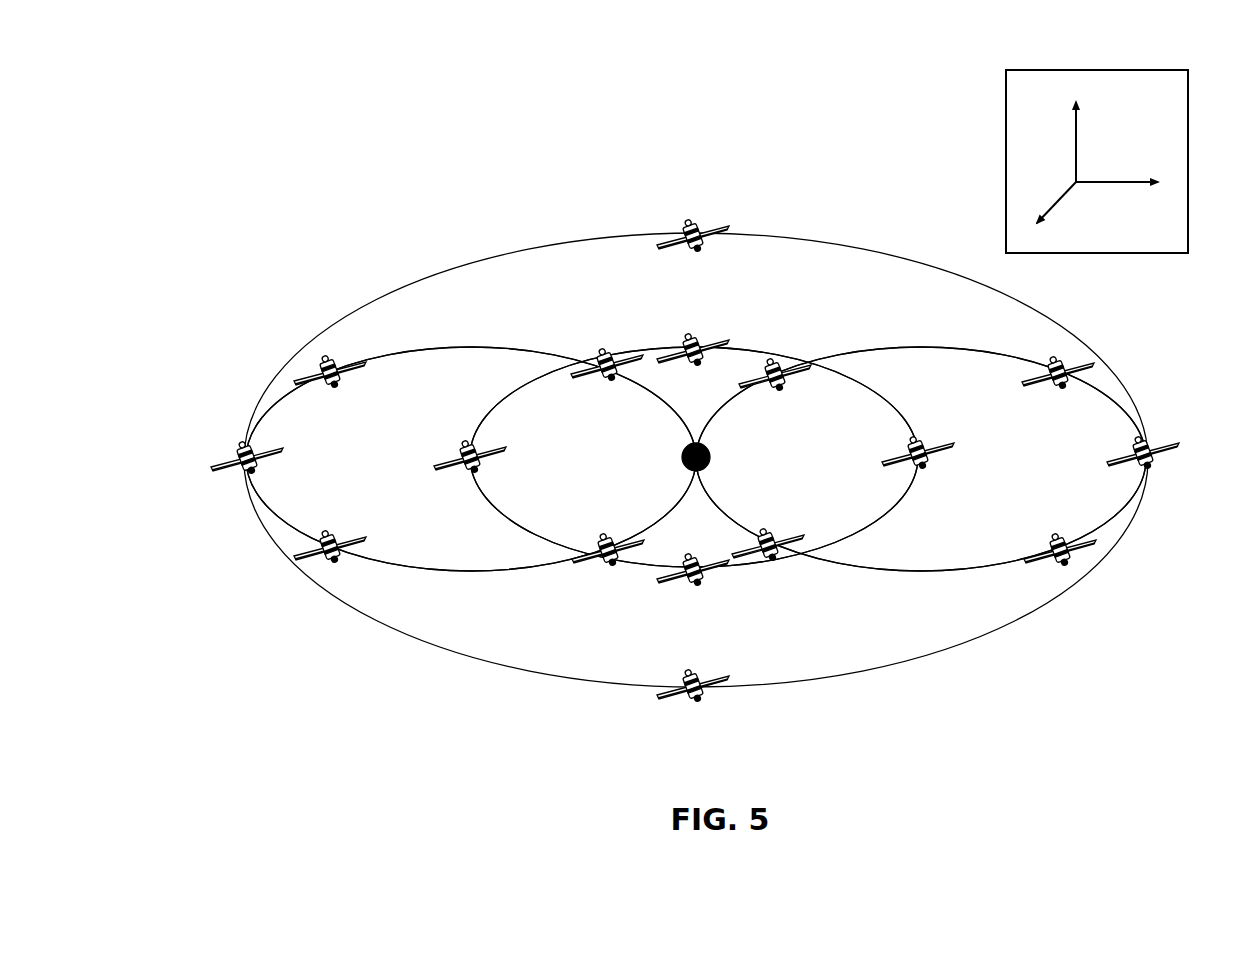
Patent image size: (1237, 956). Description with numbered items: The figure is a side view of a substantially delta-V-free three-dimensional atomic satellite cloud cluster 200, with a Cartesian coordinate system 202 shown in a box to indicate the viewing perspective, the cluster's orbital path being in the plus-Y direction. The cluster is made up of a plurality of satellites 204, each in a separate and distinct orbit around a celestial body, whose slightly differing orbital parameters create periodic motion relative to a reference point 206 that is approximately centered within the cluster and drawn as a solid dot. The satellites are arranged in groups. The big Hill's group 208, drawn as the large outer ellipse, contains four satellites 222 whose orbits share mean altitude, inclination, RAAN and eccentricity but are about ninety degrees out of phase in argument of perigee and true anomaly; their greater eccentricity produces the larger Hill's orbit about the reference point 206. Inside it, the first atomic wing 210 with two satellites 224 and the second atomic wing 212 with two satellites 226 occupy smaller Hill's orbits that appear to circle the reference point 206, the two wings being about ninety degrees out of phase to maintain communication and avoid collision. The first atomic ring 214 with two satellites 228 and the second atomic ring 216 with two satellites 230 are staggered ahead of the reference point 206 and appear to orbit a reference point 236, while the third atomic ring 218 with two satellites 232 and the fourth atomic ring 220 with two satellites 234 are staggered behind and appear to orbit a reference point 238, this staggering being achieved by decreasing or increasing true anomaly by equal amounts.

The satellite cloud cluster 200 is at (297, 222).
The Cartesian coordinate system 202 is at (1006, 185).
The satellites 204 is at (1072, 697).
The reference point 206 is at (710, 452).
The big Hill's group 208 is at (905, 664).
The first atomic wing 210 is at (497, 405).
The second atomic wing 212 is at (497, 405).
The first atomic ring 214 is at (483, 572).
The second atomic ring 216 is at (483, 572).
The third atomic ring 218 is at (900, 347).
The fourth atomic ring 220 is at (900, 347).
The satellites 222 is at (685, 228).
The satellites 224 is at (682, 340).
The satellites 226 is at (460, 447).
The satellites 228 is at (345, 382).
The satellites 230 is at (343, 537).
The satellites 232 is at (788, 387).
The satellites 234 is at (1048, 385).
The reference point 236 is at (466, 478).
The reference point 238 is at (905, 440).